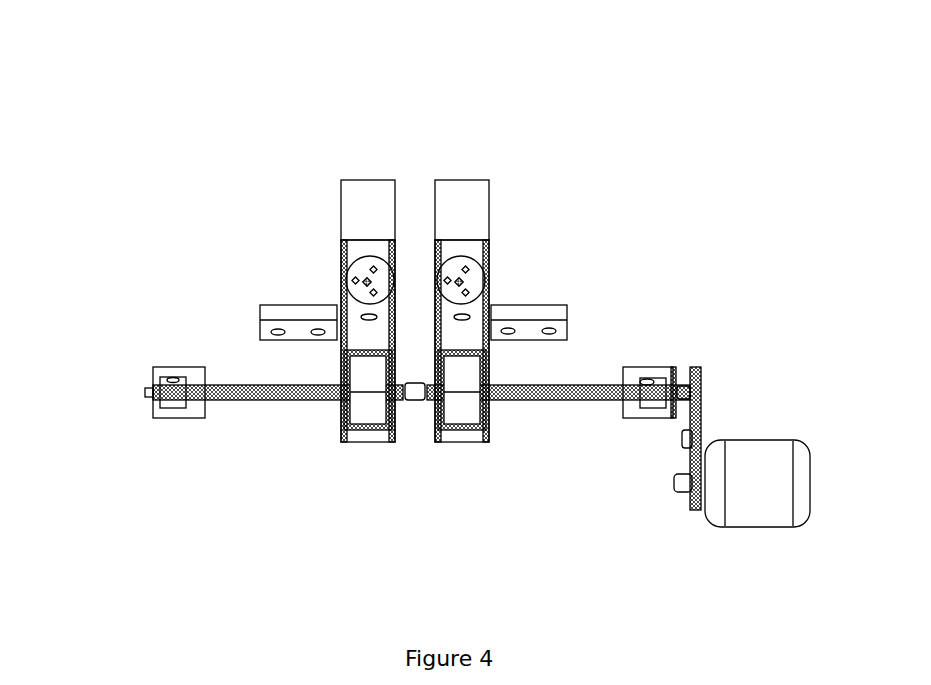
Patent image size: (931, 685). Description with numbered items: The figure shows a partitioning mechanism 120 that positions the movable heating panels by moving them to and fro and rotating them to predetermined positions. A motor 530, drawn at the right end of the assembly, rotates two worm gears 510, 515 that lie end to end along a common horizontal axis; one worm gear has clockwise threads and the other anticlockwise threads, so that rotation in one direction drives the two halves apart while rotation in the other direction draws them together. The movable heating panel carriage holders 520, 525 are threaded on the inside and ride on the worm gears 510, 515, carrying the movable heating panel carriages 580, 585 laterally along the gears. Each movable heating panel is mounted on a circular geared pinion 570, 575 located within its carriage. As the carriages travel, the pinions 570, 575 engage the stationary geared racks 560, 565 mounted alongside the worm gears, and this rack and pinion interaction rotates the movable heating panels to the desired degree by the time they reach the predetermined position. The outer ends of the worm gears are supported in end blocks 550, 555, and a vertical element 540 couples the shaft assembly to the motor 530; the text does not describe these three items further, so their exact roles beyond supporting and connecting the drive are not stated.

The partitioning mechanism 120 is at (166, 164).
The worm gear 510 is at (280, 401).
The worm gear 515 is at (568, 403).
The movable heating panel carriage holder 520 is at (345, 321).
The movable heating panel carriage holder 525 is at (488, 303).
The motor 530 is at (746, 520).
The gear bar 540 is at (702, 432).
The first bearing block 550 is at (174, 366).
The second bearing block 555 is at (655, 366).
The stationary geared rack 560 is at (277, 304).
The stationary geared rack 565 is at (558, 315).
The circular geared pinion 570 is at (366, 265).
The circular geared pinion 575 is at (474, 275).
The movable heating panel carriage 580 is at (368, 190).
The movable heating panel carriage 585 is at (462, 193).